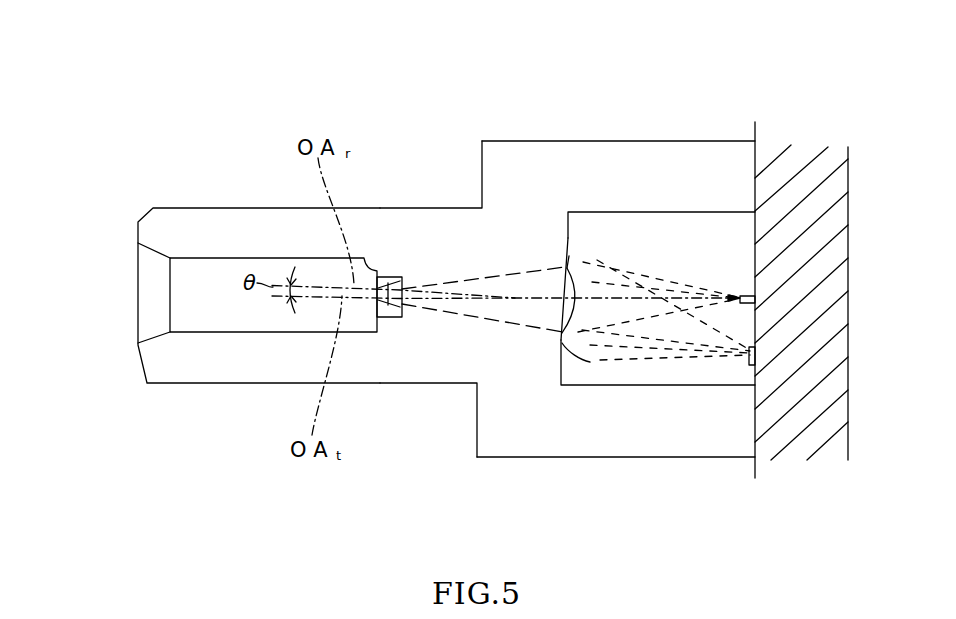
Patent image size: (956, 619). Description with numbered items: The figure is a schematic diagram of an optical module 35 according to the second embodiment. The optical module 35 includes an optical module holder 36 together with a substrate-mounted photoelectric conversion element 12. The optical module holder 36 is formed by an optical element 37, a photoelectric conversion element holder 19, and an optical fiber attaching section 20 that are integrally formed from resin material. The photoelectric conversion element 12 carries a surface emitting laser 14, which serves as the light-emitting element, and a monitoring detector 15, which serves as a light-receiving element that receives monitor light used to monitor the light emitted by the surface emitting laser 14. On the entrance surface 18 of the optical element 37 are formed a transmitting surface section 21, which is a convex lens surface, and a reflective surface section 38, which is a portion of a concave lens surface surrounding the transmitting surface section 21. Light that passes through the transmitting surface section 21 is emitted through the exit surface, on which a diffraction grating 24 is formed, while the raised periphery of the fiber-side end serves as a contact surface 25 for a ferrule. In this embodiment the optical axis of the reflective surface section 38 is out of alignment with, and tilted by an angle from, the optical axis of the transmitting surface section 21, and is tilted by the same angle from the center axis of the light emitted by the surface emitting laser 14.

The photoelectric conversion element 12 is at (757, 128).
The surface emitting laser 14 is at (747, 296).
The monitoring detector 15 is at (750, 354).
The entrance surface 18 is at (561, 373).
The photoelectric conversion element holder 19 is at (575, 141).
The optical fiber attaching section 20 is at (245, 208).
The transmitting surface section 21 is at (577, 280).
The diffraction grating 24 is at (388, 317).
The contact surface 25 is at (367, 257).
The optical module 35 is at (90, 88).
The optical module holder 36 is at (427, 208).
The optical element 37 is at (465, 328).
The reflective surface section 38 is at (590, 362).